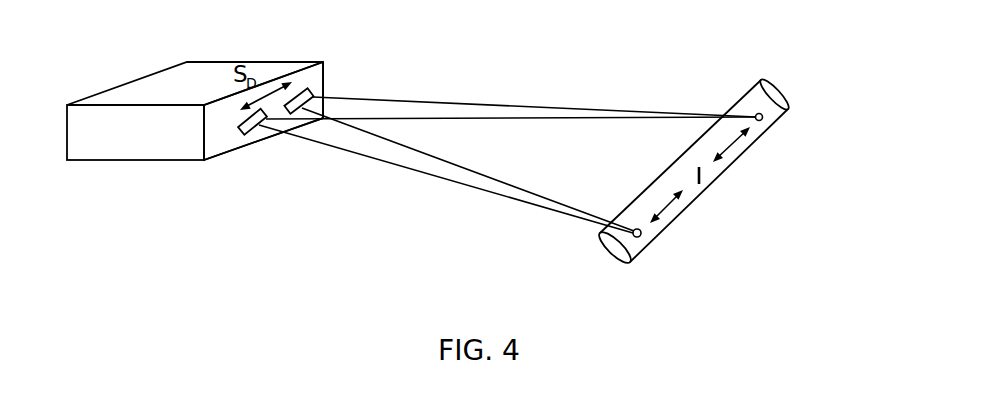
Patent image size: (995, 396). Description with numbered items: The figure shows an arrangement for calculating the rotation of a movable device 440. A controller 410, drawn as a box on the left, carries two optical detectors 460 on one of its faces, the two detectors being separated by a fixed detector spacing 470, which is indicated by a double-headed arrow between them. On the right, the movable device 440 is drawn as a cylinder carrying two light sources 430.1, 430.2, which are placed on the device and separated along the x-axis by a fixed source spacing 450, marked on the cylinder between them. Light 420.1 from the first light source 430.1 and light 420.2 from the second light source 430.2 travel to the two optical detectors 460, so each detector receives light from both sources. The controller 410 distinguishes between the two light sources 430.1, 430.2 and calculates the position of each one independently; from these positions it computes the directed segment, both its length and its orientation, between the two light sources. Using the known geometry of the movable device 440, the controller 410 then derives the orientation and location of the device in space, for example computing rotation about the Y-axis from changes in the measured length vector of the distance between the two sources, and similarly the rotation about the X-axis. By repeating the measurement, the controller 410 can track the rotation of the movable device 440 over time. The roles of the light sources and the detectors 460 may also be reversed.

The controller 410 is at (192, 61).
The fixed distance S_D 470 is at (241, 62).
The optical detectors 460 is at (306, 88).
The light 420.1 is at (478, 103).
The light 420.2 is at (462, 186).
The movable device 440 is at (738, 100).
The fixed distance l 450 is at (710, 172).
The light source 430.1 is at (776, 132).
The light source 430.2 is at (669, 231).